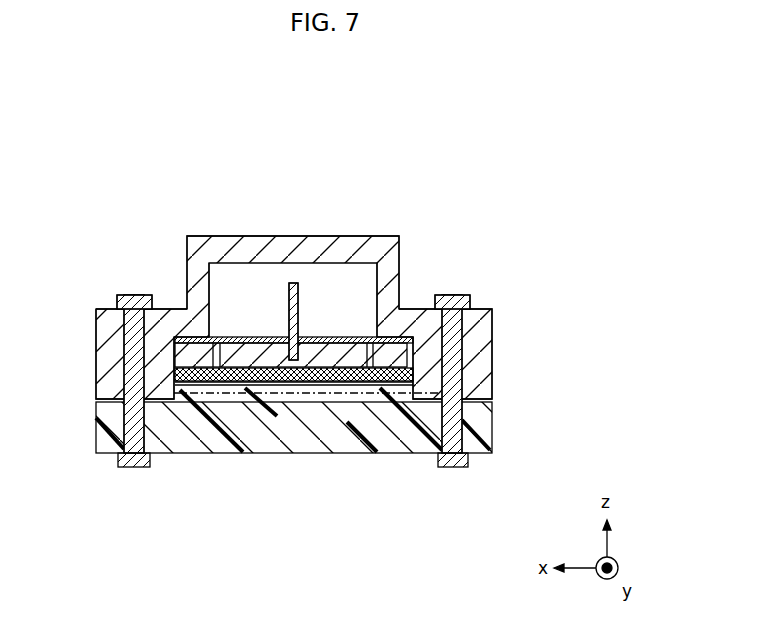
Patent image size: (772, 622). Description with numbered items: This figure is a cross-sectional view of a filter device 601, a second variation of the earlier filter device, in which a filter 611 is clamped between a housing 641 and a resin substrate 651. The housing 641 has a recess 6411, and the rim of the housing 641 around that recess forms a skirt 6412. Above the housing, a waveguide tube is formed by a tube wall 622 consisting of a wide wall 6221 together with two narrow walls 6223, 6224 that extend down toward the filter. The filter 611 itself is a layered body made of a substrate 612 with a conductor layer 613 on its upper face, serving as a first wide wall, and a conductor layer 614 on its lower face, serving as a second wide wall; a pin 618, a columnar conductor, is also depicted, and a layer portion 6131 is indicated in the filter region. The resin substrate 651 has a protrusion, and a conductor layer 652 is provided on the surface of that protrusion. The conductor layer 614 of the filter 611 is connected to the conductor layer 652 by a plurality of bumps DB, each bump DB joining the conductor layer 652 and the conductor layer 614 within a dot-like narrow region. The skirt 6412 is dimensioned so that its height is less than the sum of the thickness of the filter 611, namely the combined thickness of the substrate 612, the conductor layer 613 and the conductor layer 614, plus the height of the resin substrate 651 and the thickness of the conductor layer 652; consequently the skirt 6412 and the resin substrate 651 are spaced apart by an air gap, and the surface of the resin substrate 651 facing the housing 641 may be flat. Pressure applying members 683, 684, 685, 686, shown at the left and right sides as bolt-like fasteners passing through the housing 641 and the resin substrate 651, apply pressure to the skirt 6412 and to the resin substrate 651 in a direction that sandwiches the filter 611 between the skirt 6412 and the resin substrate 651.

The filter device 601 is at (490, 135).
The housing 641 is at (413, 153).
The tube wall 622 is at (322, 186).
The wide wall 6221 is at (326, 237).
The narrow wall 6223 is at (376, 288).
The narrow wall 6224 is at (214, 288).
The filter 611 is at (368, 333).
The substrate 612 is at (237, 357).
The conductor layer 613 is at (212, 338).
The pin 618 is at (299, 318).
The wiring layer 6131 is at (296, 386).
The conductor layer 614 is at (285, 392).
The resin substrate 651 is at (178, 456).
The conductor layer 652 is at (202, 412).
The bump DB is at (232, 408).
The recess 6411 is at (493, 349).
The skirt 6412 is at (96, 352).
The pressure applying member 683 is at (119, 466).
The pressure applying member 684 is at (122, 296).
The pressure applying member 685 is at (469, 466).
The pressure applying member 686 is at (466, 297).